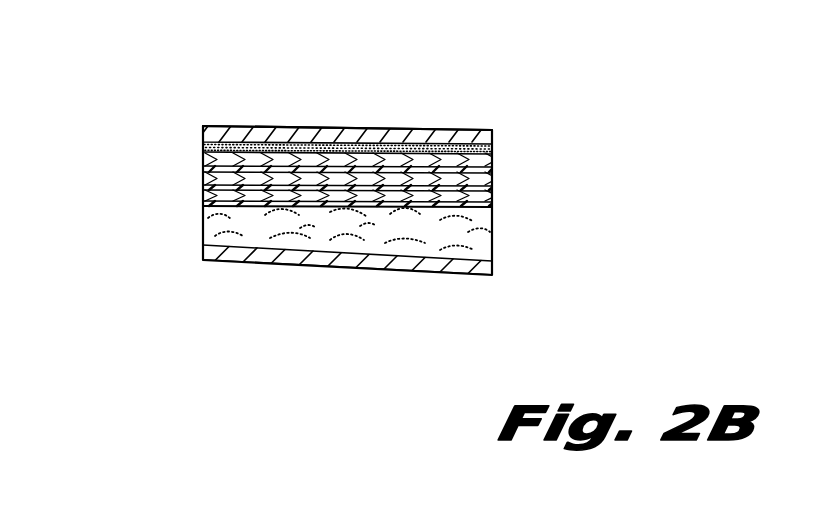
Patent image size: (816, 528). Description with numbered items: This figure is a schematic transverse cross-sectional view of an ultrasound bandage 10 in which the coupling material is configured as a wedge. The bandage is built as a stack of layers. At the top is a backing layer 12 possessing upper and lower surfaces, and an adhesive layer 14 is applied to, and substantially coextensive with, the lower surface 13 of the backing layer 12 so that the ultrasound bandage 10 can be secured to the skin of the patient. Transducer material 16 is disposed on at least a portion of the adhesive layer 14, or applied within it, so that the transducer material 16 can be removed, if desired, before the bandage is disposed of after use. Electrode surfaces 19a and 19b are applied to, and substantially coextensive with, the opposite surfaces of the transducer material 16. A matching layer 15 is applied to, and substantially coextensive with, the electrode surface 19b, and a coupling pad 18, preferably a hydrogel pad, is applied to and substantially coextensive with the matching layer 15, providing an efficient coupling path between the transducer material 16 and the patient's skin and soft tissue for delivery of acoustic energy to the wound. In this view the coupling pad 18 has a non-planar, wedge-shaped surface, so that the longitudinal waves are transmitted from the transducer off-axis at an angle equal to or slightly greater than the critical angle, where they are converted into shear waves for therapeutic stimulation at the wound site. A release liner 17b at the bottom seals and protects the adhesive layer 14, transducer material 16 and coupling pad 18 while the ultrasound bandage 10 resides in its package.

The ultrasound bandage 10 is at (281, 160).
The backing layer 12 is at (339, 103).
The lower surface 13 is at (340, 88).
The adhesive layer 14 is at (305, 159).
The matching layer 15 is at (349, 136).
The transducer material 16 is at (350, 126).
The release liner 17b is at (334, 294).
The coupling pad 18 is at (350, 263).
The electrode surface 19a is at (350, 115).
The electrode surface 19b is at (350, 133).